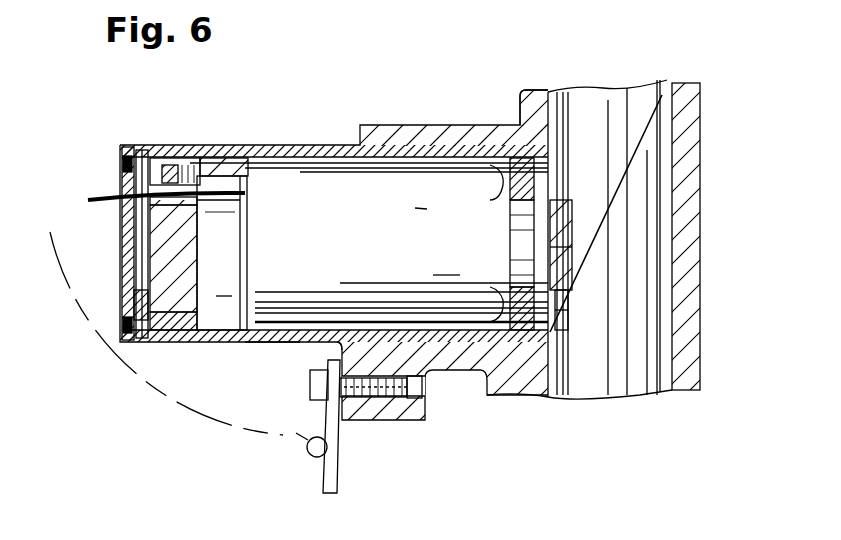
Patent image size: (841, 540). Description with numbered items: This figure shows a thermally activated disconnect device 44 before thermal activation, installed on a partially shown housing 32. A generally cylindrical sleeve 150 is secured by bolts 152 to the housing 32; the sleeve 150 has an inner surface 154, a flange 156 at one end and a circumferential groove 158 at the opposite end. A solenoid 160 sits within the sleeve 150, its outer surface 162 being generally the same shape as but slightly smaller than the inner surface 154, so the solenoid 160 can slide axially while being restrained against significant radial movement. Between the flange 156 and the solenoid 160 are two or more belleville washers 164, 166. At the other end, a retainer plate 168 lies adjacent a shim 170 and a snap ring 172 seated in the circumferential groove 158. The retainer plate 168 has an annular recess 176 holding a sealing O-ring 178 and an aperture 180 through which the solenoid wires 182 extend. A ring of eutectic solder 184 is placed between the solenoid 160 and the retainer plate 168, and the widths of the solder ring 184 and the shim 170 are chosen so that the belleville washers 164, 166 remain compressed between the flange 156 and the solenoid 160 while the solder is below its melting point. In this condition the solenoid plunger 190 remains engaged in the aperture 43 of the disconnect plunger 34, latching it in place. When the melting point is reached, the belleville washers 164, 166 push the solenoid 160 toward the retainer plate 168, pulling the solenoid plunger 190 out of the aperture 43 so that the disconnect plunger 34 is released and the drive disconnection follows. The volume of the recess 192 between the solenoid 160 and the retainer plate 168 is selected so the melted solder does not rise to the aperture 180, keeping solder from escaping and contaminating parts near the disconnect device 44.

The housing 32 is at (405, 420).
The disconnect plunger 34 is at (657, 220).
The aperture 43 is at (572, 233).
The disconnect device 44 is at (255, 343).
The sleeve 150 is at (332, 145).
The bolts 152 is at (310, 387).
The inner surface 154 is at (113, 160).
The flange 156 is at (548, 170).
The circumferential groove 158 is at (162, 330).
The solenoid 160 is at (300, 178).
The outer surface 162 is at (426, 254).
The belleville washer 164 is at (537, 93).
The belleville washer 166 is at (500, 178).
The retainer plate 168 is at (158, 243).
The shim 170 is at (133, 317).
The snap ring 172 is at (100, 340).
The annular recess 176 is at (174, 158).
The sealing O-ring 178 is at (207, 165).
The aperture 180 is at (162, 205).
The solenoid wires 182 is at (122, 175).
The eutectic solder ring 184 is at (224, 296).
The solenoid plunger 190 is at (568, 290).
The recess 192 is at (245, 230).